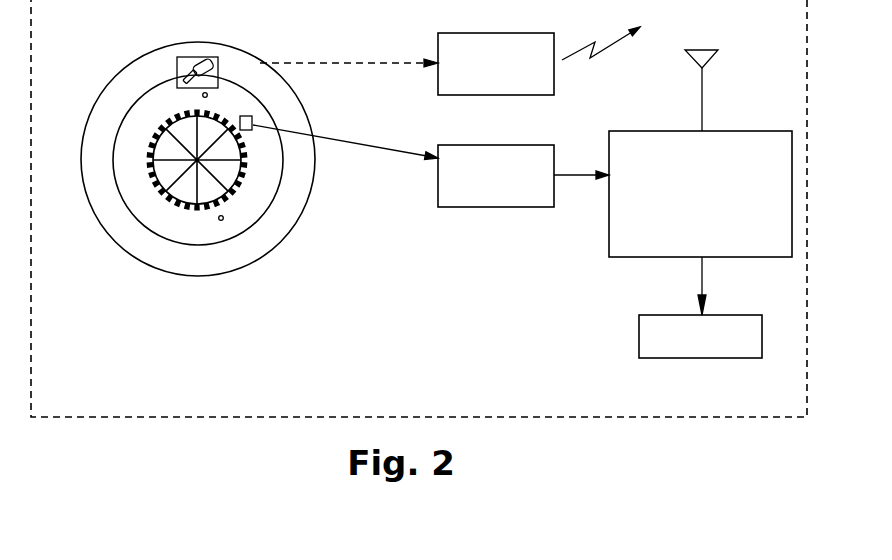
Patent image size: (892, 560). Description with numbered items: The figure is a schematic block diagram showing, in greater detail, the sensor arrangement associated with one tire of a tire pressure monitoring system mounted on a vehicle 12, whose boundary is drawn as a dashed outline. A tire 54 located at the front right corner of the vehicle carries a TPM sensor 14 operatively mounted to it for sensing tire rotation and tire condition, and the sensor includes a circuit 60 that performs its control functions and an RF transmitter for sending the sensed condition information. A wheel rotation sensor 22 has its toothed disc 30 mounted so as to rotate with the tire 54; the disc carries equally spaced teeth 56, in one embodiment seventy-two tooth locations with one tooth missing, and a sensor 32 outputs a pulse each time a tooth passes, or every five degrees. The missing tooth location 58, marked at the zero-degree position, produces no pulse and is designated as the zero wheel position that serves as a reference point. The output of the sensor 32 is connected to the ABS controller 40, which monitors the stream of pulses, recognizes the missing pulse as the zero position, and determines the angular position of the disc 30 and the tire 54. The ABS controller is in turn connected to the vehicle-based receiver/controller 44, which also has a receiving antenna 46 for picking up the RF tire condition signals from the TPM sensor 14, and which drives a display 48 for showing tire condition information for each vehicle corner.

The vehicle 12 is at (152, 418).
The TPM sensor 14 is at (203, 62).
The wheel rotation sensor 22 is at (138, 190).
The toothed disc 30 is at (220, 201).
The sensor 32 is at (253, 118).
The ABS controller 40 is at (470, 145).
The vehicle-based receiver/controller 44 is at (735, 131).
The receiving antenna 46 is at (712, 58).
The display 48 is at (730, 358).
The tire 54 is at (135, 75).
The teeth 56 is at (248, 173).
The missing tooth location 58 is at (207, 107).
The circuit 60 is at (554, 80).